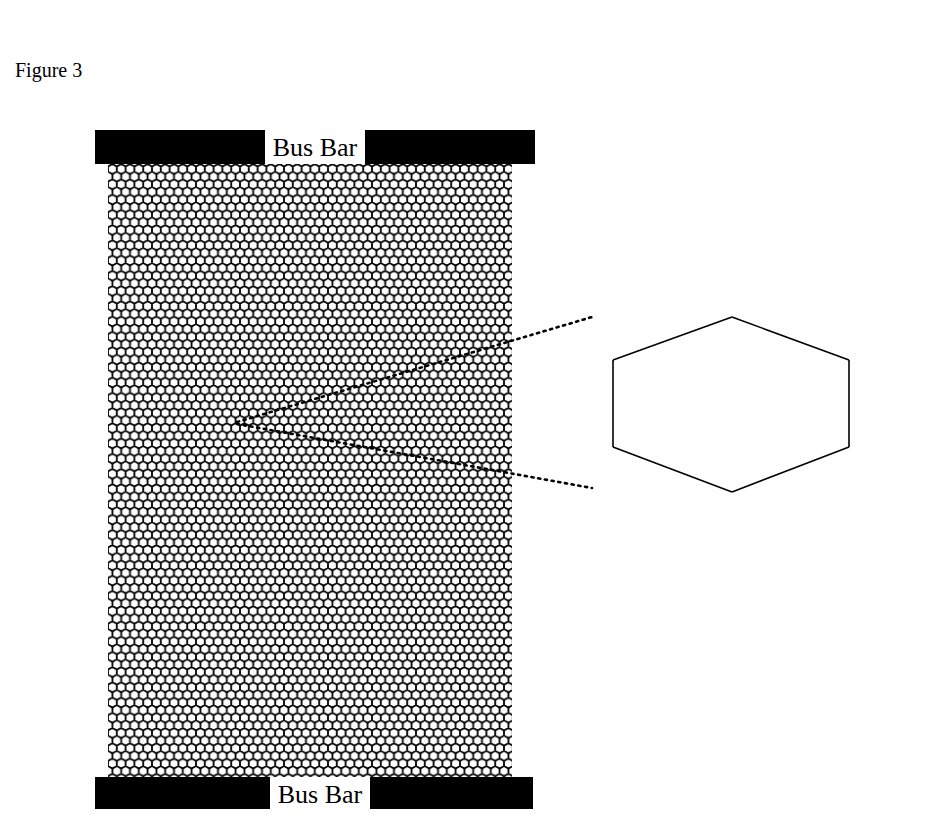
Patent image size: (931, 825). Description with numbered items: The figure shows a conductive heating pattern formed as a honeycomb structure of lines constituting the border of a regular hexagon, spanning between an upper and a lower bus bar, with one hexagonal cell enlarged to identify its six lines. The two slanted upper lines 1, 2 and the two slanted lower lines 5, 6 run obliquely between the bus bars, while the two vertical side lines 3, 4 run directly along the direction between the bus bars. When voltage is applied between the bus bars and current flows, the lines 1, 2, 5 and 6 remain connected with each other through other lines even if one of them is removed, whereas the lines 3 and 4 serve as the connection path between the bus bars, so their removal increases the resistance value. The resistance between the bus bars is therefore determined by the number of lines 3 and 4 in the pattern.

The line of the regular hexagon 1 is at (672, 338).
The line of the regular hexagon 2 is at (790, 338).
The line of the regular hexagon 3 is at (613, 403).
The line of the regular hexagon 4 is at (846, 403).
The line of the regular hexagon 5 is at (672, 469).
The line of the regular hexagon 6 is at (790, 469).